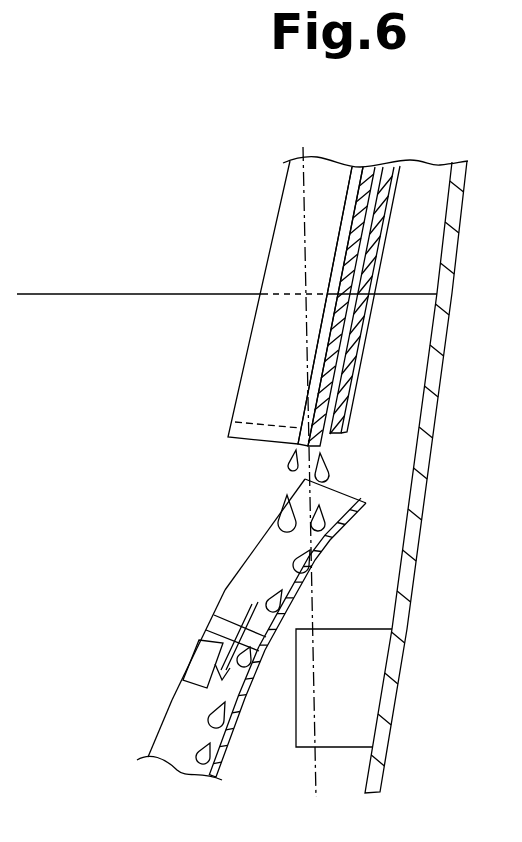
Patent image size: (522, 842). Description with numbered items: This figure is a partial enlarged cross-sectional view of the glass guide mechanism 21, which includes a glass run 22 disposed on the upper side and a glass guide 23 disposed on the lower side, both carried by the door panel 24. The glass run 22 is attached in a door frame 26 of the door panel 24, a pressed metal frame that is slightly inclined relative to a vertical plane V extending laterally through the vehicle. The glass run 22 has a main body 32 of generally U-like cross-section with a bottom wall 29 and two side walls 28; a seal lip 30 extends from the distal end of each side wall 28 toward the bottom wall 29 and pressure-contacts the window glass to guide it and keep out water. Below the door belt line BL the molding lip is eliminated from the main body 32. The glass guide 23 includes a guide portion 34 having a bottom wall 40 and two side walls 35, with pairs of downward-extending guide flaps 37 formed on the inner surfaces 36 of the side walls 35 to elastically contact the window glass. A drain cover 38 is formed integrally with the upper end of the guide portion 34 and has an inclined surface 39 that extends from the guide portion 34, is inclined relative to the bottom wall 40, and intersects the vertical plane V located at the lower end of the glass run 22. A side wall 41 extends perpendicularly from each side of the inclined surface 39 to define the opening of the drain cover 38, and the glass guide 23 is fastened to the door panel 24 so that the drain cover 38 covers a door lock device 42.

The glass guide mechanism 21 is at (212, 242).
The glass run 22 is at (332, 153).
The glass guide 23 is at (173, 593).
The door panel 24 is at (437, 355).
The door frame 26 is at (393, 186).
The side wall 28 is at (357, 170).
The bottom wall 29 is at (347, 320).
The seal lip 30 is at (258, 377).
The main body 32 is at (330, 377).
The guide portion 34 is at (243, 700).
The side wall 35 is at (150, 747).
The inner surface 36 is at (175, 717).
The guide flap 37 is at (200, 660).
The drain cover 38 is at (362, 528).
The inclined surface 39 is at (350, 497).
The bottom wall 40 is at (195, 776).
The side wall 41 is at (262, 552).
The door lock device 42 is at (368, 685).
The door belt line BL is at (42, 294).
The vertical plane V is at (313, 773).